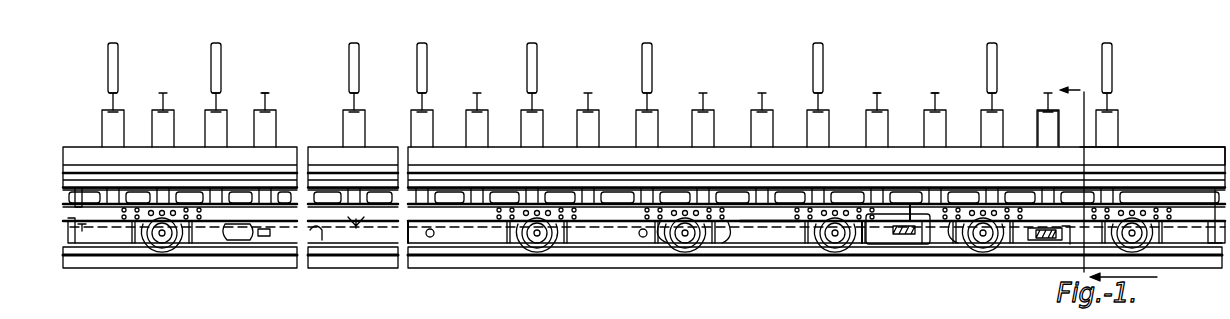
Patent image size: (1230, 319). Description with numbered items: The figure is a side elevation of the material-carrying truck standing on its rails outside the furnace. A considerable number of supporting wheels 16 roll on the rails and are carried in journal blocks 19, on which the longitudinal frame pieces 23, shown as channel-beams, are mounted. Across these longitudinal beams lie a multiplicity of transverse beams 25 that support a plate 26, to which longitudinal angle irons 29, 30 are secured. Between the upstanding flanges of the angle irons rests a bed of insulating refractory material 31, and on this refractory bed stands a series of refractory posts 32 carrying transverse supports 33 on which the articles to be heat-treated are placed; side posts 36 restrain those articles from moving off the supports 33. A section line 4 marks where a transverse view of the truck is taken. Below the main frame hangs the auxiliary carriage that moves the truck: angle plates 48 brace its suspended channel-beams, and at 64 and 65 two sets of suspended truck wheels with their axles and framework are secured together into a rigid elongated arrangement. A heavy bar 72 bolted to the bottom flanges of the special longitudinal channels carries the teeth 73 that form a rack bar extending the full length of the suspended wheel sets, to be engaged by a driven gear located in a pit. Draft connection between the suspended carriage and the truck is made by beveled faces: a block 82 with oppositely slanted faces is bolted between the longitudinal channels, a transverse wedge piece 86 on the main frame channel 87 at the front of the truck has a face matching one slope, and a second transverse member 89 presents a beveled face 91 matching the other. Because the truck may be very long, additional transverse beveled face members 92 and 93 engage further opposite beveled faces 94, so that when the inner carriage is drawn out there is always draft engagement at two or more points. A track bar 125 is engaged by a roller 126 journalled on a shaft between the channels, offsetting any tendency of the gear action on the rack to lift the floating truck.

The section line 4- 4 is at (1118, 182).
The supporting wheel 16 is at (170, 244).
The journal block 19 is at (160, 236).
The longitudinal frame piece 23 is at (770, 223).
The transverse beam 25 is at (750, 200).
The plate 26 is at (790, 192).
The longitudinal angle iron 29 is at (1134, 162).
The longitudinal angle iron 30 is at (960, 172).
The insulating refractory material 31 is at (1028, 150).
The post 32 is at (466, 112).
The transverse support 33 is at (268, 103).
The side post 36 is at (211, 57).
The angle plate 48 is at (727, 240).
The set of suspended truck wheels 64 is at (1064, 244).
The set of suspended truck wheels 65 is at (238, 240).
The heavy bar 72 is at (313, 242).
The teeth 73 is at (923, 245).
The block 82 is at (1042, 242).
The transverse wedge piece 86 is at (1215, 234).
The main frame channel 87 is at (92, 192).
The second transverse member 89 is at (905, 245).
The beveled face 91 is at (912, 204).
The transverse beveled face member 92 is at (357, 229).
The transverse beveled face member 93 is at (87, 232).
The beveled face 94 is at (262, 237).
The track bar 125 is at (410, 232).
The roller 126 is at (434, 232).